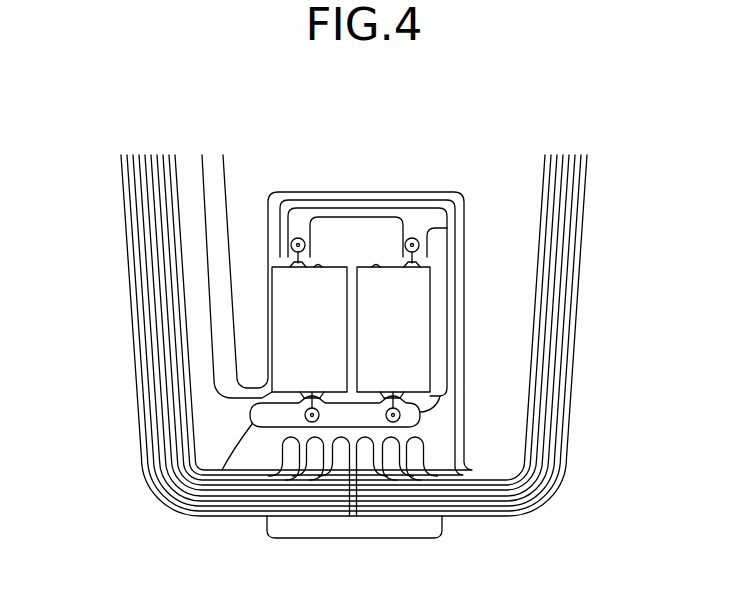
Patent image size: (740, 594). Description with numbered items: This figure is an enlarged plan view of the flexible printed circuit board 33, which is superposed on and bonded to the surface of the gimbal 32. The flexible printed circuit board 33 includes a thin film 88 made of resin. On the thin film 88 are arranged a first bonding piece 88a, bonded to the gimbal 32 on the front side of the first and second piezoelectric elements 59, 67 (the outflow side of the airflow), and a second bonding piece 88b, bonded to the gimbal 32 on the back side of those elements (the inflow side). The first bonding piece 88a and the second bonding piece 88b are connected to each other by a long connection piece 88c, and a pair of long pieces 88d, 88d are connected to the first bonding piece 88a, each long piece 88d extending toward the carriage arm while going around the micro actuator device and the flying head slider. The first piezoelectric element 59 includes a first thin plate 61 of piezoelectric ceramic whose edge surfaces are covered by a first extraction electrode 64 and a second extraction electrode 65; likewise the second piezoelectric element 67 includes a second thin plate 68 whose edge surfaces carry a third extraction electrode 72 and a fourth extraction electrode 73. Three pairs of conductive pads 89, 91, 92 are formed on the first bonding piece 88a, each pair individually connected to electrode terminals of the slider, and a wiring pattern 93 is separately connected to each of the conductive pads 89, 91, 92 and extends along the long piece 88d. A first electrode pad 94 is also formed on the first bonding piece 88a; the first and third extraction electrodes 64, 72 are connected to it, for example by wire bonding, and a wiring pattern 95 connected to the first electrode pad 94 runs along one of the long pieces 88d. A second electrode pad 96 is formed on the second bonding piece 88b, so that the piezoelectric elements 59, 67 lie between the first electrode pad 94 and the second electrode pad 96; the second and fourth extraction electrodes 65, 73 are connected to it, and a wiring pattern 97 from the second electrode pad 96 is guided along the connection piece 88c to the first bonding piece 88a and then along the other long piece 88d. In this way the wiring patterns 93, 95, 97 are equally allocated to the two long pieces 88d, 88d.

The gimbal 32 is at (384, 194).
The flexible printed circuit board 33 is at (578, 295).
The first piezoelectric element 59 is at (430, 330).
The first thin plate 61 is at (487, 316).
The first extraction electrode 64 is at (378, 393).
The second extraction electrode 65 is at (376, 268).
The second piezoelectric element 67 is at (272, 322).
The second thin plate 68 is at (217, 313).
The third extraction electrode 72 is at (293, 393).
The fourth extraction electrode 73 is at (306, 268).
The thin film 88 is at (358, 334).
The first bonding piece 88a is at (255, 420).
The second bonding piece 88b is at (290, 201).
The connection piece 88c is at (466, 233).
The long piece 88d is at (124, 184).
The conductive pads 89 is at (347, 450).
The conductive pads 91 is at (315, 450).
The conductive pads 92 is at (288, 448).
The wiring pattern 93 is at (150, 336).
The first electrode pad 94 is at (418, 414).
The wiring pattern 95 is at (250, 435).
The second electrode pad 96 is at (301, 217).
The wiring pattern 97 is at (451, 210).